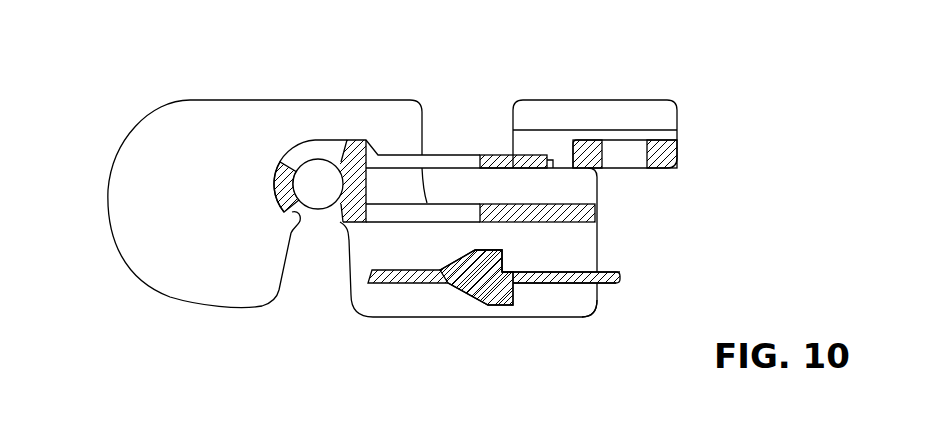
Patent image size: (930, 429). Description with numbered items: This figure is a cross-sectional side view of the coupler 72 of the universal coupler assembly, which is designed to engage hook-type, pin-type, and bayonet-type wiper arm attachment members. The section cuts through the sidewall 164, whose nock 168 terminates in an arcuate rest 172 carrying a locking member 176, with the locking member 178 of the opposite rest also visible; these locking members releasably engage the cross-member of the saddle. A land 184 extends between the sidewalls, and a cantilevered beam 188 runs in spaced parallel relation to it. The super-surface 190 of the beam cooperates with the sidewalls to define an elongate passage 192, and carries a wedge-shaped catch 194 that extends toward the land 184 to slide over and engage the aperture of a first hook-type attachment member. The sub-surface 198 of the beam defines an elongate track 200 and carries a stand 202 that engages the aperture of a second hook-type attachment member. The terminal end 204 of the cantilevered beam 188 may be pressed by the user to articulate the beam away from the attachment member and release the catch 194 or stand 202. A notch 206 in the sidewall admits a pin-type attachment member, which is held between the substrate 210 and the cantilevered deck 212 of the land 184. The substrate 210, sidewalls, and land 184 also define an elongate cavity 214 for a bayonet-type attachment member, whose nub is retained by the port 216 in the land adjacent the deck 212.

The coupler 72 is at (110, 135).
The sidewall 164 is at (193, 106).
The nock 168 is at (313, 277).
The arcuate rest 172 is at (317, 157).
The locking member 176 is at (293, 212).
The locking member 178 is at (343, 222).
The land 184 is at (678, 153).
The cantilevered beam 188 is at (610, 285).
The super-surface 190 is at (606, 272).
The elongate passage 192 is at (606, 247).
The catch 194 is at (500, 262).
The sub-surface 198 is at (554, 285).
The elongate track 200 is at (598, 313).
The stand 202 is at (494, 306).
The terminal end 204 is at (620, 278).
The notch 206 is at (451, 105).
The substrate 210 is at (596, 212).
The cantilevered deck 212 is at (505, 157).
The elongate cavity 214 is at (608, 197).
The port 216 is at (626, 136).